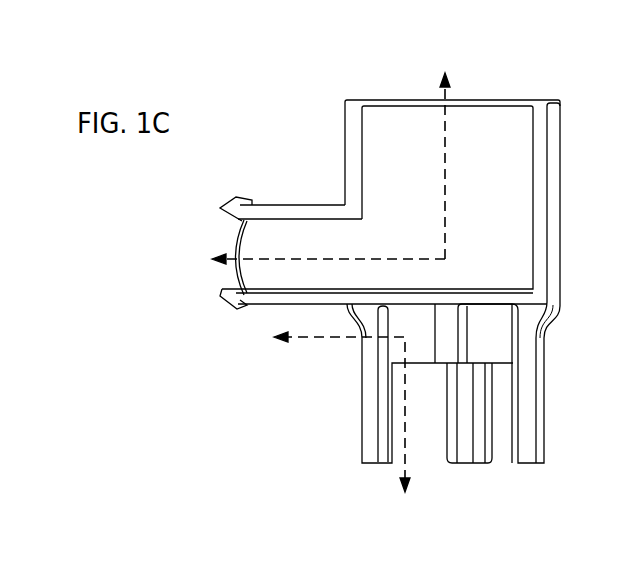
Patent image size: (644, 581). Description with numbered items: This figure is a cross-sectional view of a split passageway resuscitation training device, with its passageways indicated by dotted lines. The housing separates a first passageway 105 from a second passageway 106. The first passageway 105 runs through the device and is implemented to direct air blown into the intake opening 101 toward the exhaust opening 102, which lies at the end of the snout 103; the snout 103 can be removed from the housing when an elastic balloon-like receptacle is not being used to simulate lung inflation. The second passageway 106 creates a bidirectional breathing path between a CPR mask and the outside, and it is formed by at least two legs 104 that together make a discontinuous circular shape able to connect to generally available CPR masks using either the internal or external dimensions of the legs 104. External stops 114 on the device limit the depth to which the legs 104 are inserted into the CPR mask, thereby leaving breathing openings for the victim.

The intake opening 101 is at (500, 86).
The exhaust opening 102 is at (209, 232).
The snout 103 is at (297, 210).
The legs 104 is at (373, 425).
The first passageway 105 is at (443, 94).
The second passageway 106 is at (317, 338).
The external stops 114 is at (558, 325).